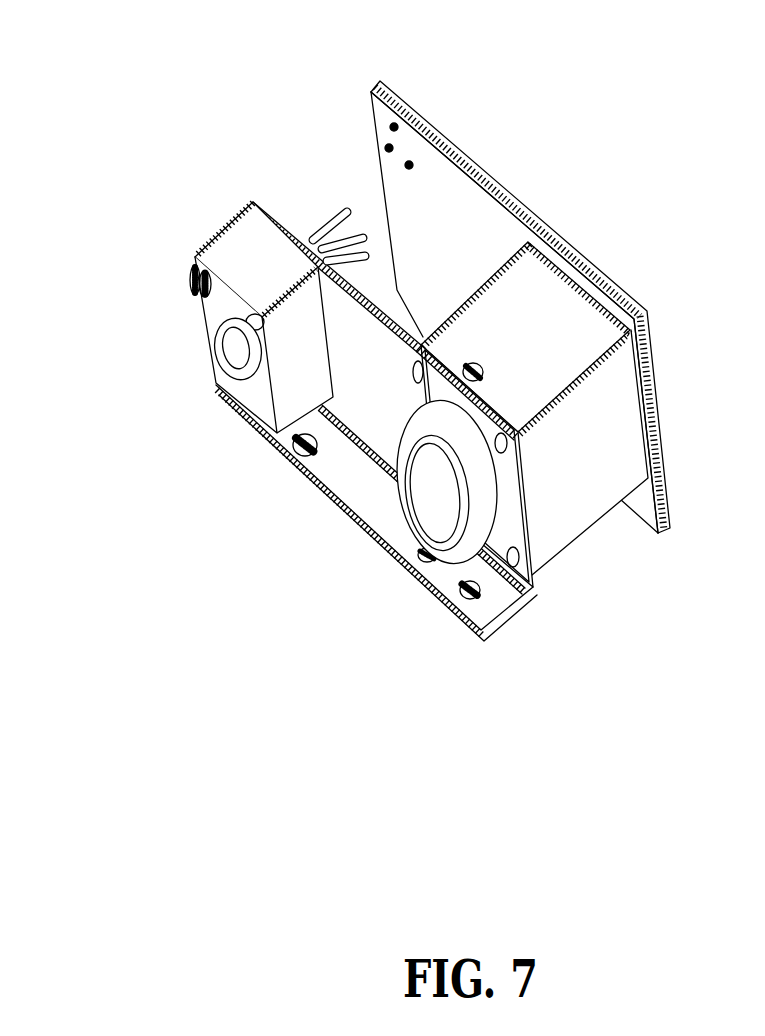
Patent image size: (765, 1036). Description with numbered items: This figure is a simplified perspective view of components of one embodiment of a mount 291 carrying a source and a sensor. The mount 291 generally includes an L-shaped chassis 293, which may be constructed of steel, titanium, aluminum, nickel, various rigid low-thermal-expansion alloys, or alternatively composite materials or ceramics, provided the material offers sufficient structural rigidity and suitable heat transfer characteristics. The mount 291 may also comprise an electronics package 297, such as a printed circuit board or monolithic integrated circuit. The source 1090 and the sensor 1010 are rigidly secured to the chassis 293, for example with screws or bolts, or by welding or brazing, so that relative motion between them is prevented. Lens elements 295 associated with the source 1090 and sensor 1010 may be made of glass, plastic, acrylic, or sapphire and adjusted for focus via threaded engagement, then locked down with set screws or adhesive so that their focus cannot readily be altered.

The electronics package 297 is at (406, 118).
The sensor 1010 is at (582, 556).
The L-shaped chassis 293 is at (307, 478).
The mount 291 is at (196, 485).
The source 1090 is at (178, 323).
The lens elements 295 is at (234, 347).